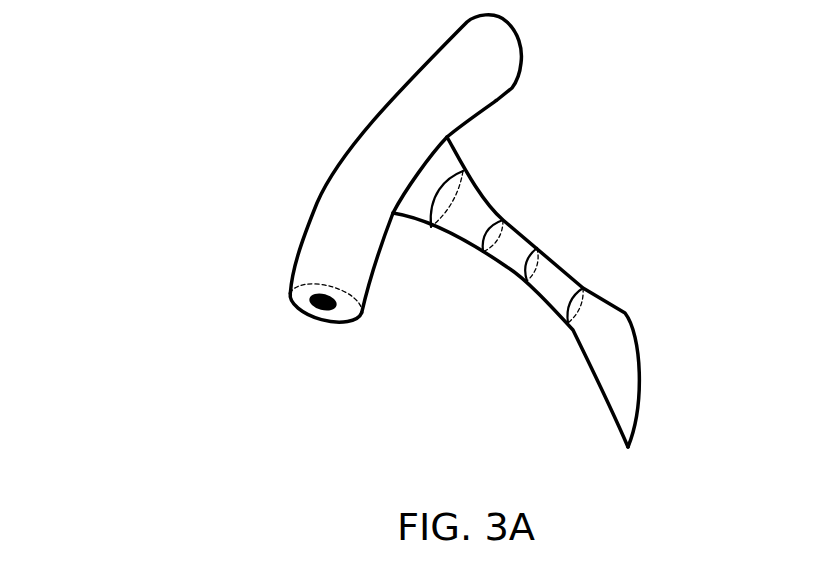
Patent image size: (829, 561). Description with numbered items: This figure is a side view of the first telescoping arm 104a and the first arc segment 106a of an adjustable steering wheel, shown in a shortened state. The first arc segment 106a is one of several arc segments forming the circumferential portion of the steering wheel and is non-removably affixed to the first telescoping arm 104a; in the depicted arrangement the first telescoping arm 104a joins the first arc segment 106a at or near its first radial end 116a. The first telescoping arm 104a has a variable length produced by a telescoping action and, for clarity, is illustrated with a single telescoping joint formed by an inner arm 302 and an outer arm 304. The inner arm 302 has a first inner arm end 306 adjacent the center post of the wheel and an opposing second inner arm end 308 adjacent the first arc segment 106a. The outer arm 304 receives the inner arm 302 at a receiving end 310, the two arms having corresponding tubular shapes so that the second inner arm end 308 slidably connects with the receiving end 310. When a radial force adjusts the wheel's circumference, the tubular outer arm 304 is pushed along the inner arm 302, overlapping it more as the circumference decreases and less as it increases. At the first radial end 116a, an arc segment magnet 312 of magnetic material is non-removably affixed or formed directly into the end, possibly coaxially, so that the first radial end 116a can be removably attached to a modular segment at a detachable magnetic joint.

The first telescoping arm 104a is at (528, 201).
The first arc segment 106a is at (347, 148).
The first radial end 116a is at (291, 297).
The inner arm 302 is at (540, 243).
The outer arm 304 is at (484, 191).
The first inner arm end 306 is at (546, 283).
The second inner arm end 308 is at (500, 238).
The receiving end 310 is at (481, 234).
The arc segment magnet 312 is at (320, 304).